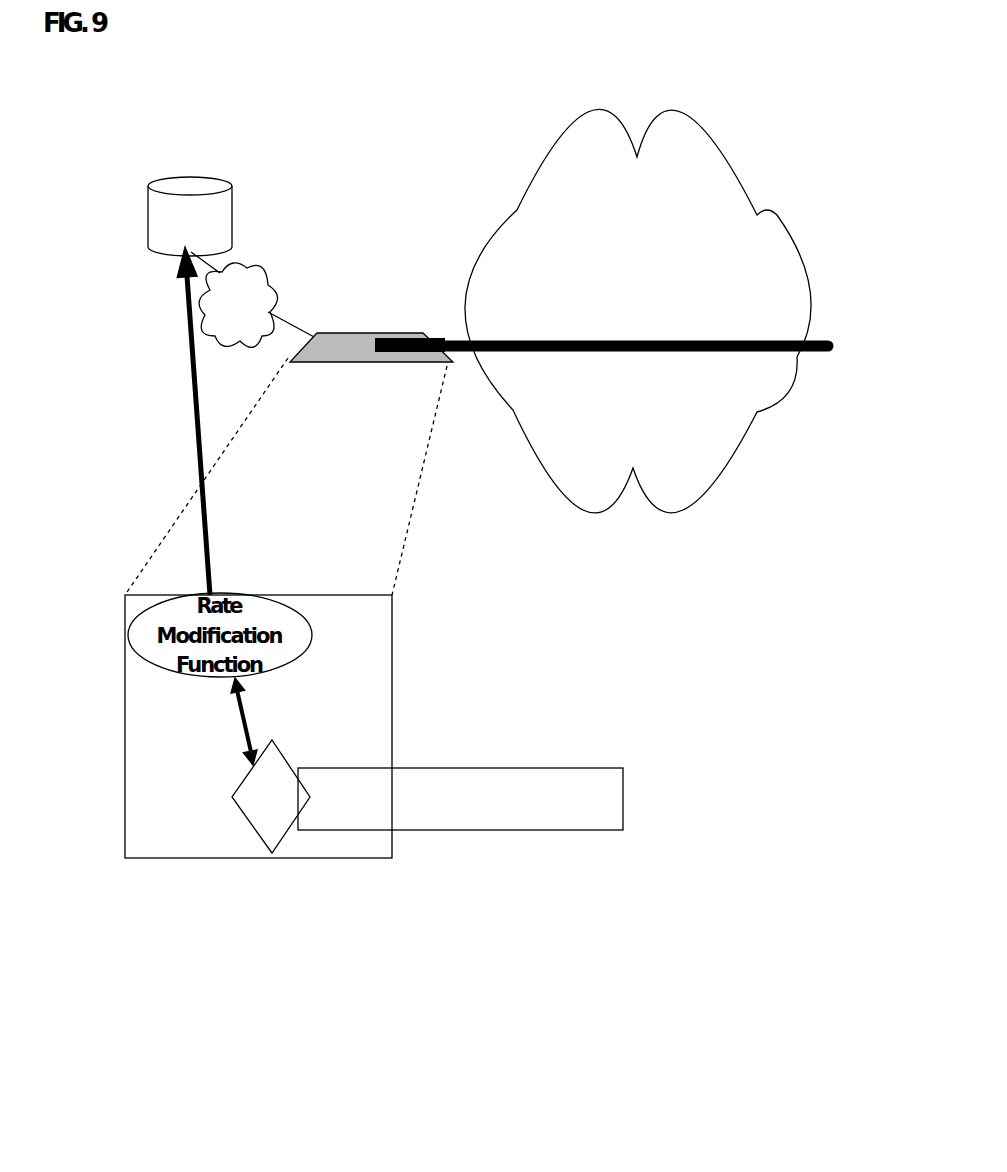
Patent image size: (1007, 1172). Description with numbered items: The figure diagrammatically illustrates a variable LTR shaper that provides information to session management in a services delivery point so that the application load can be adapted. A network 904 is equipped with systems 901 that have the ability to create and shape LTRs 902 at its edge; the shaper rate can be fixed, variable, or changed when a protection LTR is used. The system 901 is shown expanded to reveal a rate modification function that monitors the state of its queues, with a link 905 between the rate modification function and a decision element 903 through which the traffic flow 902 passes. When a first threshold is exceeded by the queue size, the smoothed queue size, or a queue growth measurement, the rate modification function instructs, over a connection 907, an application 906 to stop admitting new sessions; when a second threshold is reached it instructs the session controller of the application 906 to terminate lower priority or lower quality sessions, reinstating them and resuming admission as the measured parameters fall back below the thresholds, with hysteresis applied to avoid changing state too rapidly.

The system 901 is at (360, 333).
The LTR 902 is at (547, 340).
The decision / classification element 903 is at (280, 873).
The network 904 is at (797, 257).
The bidirectional communication link 905 is at (238, 717).
The application 906 is at (188, 185).
The connection to database 907 is at (188, 345).